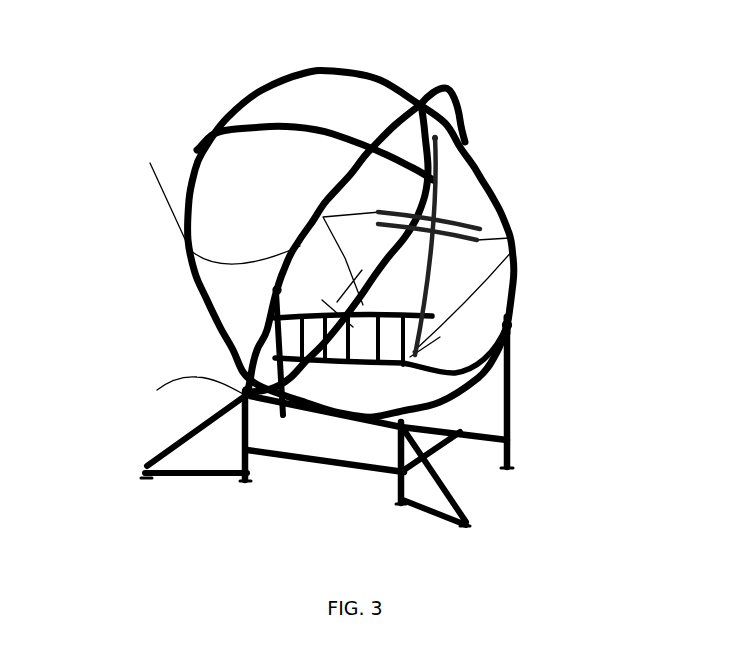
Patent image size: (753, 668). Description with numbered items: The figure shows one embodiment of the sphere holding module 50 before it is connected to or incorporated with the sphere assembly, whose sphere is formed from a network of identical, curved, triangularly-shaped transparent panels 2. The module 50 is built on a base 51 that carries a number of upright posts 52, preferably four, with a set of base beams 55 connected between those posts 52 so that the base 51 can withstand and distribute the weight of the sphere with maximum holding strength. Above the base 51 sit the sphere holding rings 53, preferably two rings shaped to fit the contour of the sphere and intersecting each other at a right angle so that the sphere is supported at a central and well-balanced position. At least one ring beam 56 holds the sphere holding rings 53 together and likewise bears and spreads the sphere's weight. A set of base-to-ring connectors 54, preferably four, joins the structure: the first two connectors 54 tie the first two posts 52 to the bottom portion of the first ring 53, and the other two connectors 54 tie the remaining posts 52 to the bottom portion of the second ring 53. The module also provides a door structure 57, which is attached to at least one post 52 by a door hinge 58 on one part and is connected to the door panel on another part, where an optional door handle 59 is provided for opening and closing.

The sphere holding module 50 is at (400, 77).
The ring beam 56 is at (323, 143).
The sphere holding rings 53 is at (190, 185).
The door hinge 58 is at (266, 309).
The door structure 57 is at (480, 229).
The door handle 59 is at (447, 213).
The transparent panels 2 is at (475, 297).
The base-to-ring connectors 54 is at (511, 323).
The base 51 is at (450, 421).
The base beam 55 is at (377, 477).
The posts 52 is at (217, 427).